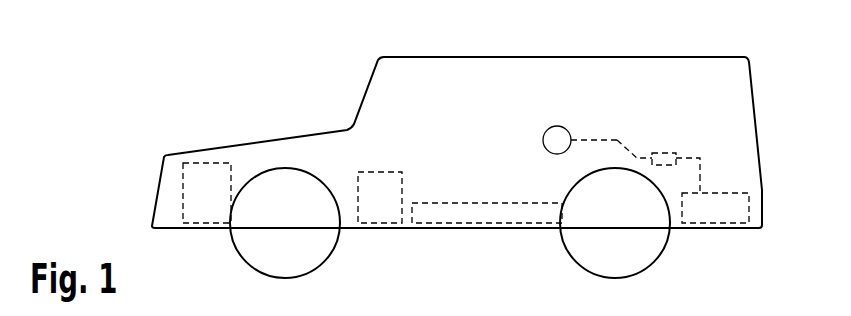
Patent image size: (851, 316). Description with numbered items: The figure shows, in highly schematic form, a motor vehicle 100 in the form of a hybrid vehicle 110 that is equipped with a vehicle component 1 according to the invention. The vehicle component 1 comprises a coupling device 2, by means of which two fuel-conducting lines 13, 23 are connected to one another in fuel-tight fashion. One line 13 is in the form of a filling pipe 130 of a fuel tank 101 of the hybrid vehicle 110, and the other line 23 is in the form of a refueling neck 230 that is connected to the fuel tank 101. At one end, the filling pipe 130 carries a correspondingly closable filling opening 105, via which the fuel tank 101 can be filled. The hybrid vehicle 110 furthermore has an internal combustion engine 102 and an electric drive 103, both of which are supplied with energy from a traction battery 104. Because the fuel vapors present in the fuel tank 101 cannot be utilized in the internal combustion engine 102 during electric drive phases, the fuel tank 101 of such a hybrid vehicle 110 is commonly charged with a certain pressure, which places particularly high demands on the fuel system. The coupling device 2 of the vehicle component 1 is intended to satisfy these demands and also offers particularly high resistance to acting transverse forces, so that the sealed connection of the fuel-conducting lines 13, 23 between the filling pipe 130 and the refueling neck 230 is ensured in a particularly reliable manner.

The motor vehicle 100 is at (446, 149).
The hybrid vehicle 110 is at (238, 130).
The vehicle component 1 is at (651, 127).
The filling opening 105 is at (548, 140).
The filling pipe 130 is at (603, 138).
The fuel-conducting line 13 is at (632, 152).
The coupling device 2 is at (667, 150).
The fuel-conducting line 23 is at (702, 172).
The refueling neck 230 is at (703, 177).
The fuel tank 101 is at (713, 207).
The internal combustion engine 102 is at (207, 207).
The electric drive 103 is at (385, 207).
The traction battery 104 is at (495, 217).